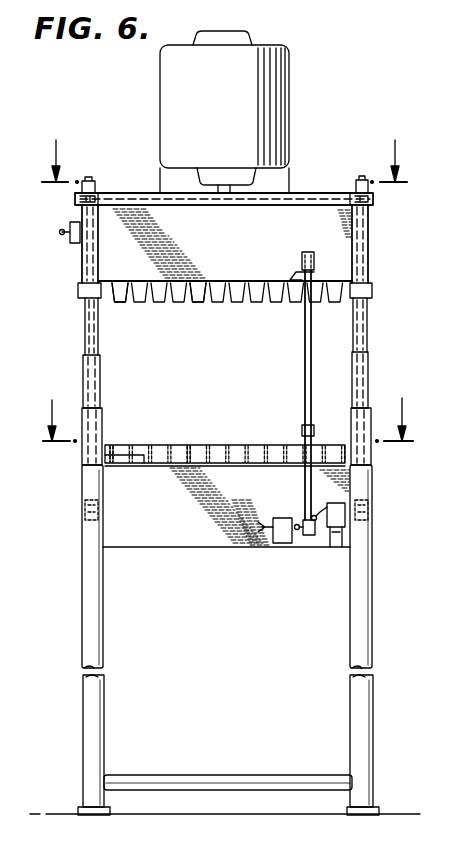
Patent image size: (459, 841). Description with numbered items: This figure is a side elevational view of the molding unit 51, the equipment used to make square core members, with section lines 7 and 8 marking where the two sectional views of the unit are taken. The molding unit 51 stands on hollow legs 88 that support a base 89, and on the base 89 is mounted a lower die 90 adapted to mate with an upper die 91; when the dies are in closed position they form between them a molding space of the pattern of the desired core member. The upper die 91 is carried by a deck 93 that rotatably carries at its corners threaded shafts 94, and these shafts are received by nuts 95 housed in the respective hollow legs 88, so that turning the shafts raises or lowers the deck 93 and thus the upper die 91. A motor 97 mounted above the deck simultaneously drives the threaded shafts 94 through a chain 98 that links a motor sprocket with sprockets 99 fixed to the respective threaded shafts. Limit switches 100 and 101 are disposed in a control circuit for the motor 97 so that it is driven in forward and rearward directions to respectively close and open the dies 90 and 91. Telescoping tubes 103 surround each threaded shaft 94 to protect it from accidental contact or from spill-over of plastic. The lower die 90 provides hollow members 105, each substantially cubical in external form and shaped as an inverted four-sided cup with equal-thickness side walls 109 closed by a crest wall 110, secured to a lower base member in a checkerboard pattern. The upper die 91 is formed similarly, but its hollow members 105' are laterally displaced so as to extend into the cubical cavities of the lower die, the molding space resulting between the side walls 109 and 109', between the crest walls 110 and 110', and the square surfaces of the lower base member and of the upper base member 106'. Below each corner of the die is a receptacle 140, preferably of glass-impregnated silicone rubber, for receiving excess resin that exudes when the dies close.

The section line 7— 7 is at (226, 154).
The section line 8— 8 is at (229, 413).
The molding unit 51 is at (318, 190).
The hollow legs 88 is at (92, 615).
The base 89 is at (183, 523).
The lower die 90 is at (243, 443).
The upper die 91 is at (268, 308).
The deck 93 is at (163, 218).
The threaded shafts 94 is at (99, 250).
The nuts 95 is at (78, 512).
The motor 97 is at (178, 103).
The chain 98 is at (287, 197).
The sprockets 99 is at (375, 200).
The limit switch 100 is at (283, 547).
The limit switch 101 is at (337, 524).
The telescoping tubes 103 is at (362, 372).
The hollow members 105 is at (308, 395).
The hollow members 105' is at (284, 389).
The base member 106' is at (225, 272).
The side walls 109' is at (190, 312).
The crest walls 110' is at (141, 312).
The side walls 109 is at (218, 436).
The crest wall 110 is at (152, 436).
The receptacle 140 is at (116, 463).